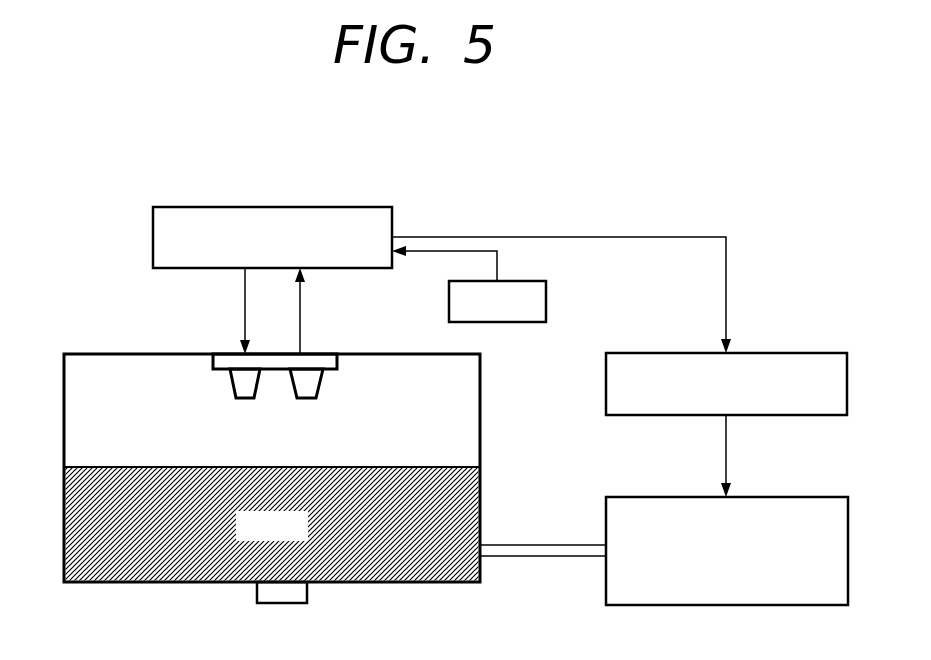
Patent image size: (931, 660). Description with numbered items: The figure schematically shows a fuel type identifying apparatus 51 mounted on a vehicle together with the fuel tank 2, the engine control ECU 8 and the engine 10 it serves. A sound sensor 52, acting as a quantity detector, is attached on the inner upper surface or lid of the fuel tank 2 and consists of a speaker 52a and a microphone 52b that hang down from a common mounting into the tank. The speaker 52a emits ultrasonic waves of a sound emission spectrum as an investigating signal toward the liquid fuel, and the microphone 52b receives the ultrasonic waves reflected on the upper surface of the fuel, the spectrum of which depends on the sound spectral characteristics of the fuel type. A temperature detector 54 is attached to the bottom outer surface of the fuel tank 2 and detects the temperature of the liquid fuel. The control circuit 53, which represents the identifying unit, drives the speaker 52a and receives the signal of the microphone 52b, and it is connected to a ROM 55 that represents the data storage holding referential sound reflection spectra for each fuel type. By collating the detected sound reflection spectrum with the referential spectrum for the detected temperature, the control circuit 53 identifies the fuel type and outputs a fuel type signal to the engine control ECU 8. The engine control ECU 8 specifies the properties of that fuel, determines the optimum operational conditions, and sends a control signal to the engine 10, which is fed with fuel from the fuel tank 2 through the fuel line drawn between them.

The fuel type identifying apparatus 51 is at (198, 150).
The fuel tank 2 is at (72, 354).
The sound sensor 52 is at (213, 362).
The speaker 52a is at (307, 380).
The microphone 52b is at (240, 385).
The control circuit 53 is at (355, 207).
The ROM 55 is at (548, 292).
The engine control ECU 8 is at (823, 353).
The engine 10 is at (823, 497).
The temperature detector 54 is at (295, 603).